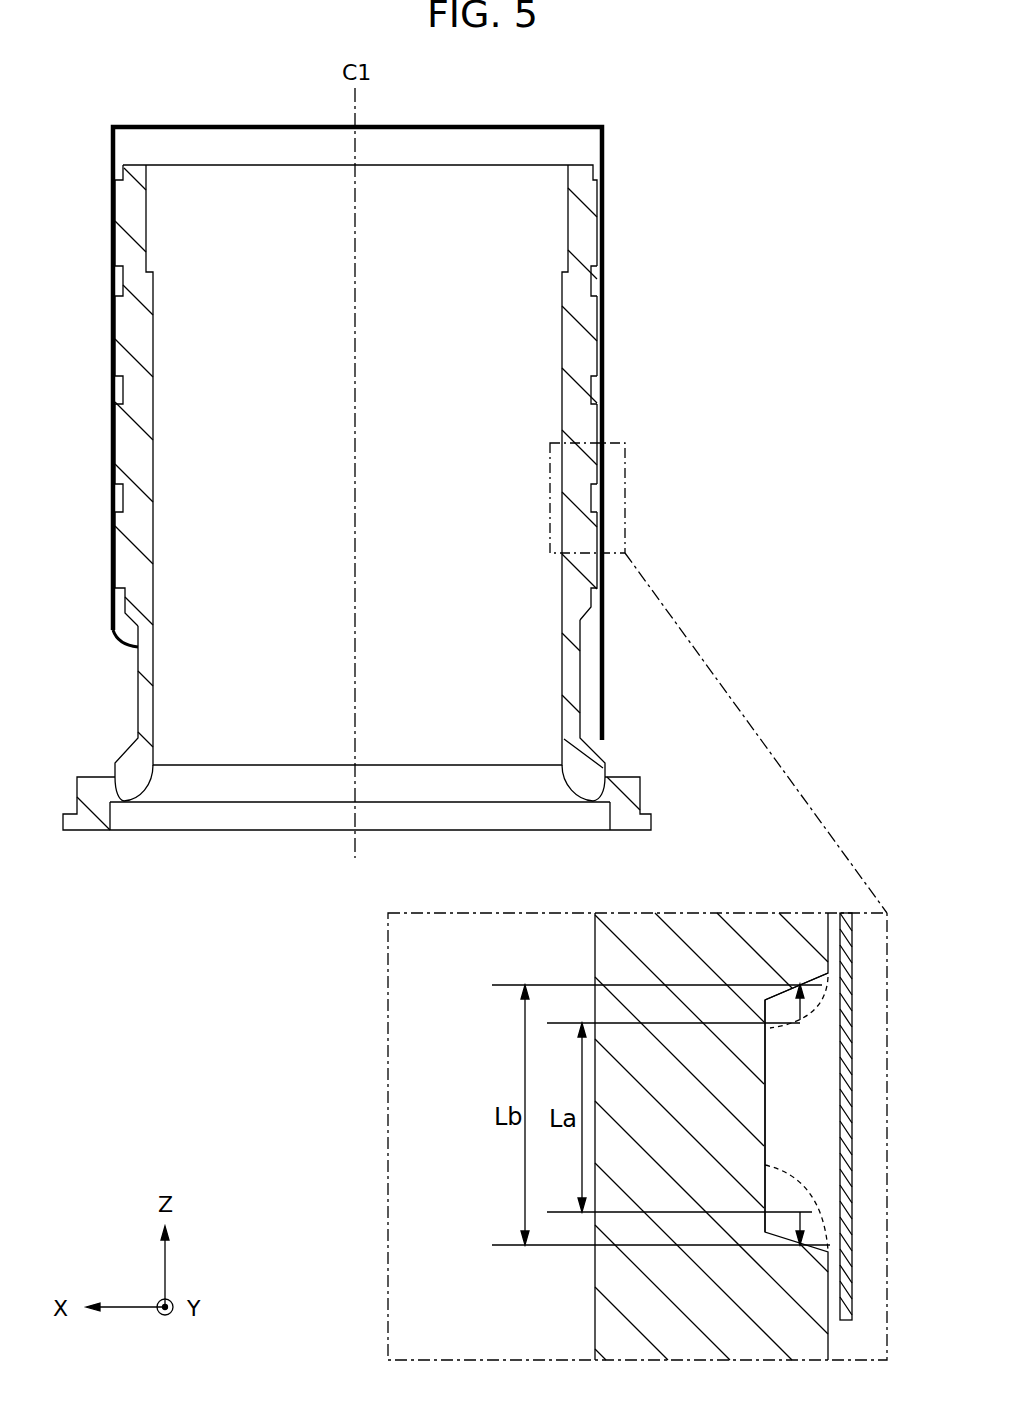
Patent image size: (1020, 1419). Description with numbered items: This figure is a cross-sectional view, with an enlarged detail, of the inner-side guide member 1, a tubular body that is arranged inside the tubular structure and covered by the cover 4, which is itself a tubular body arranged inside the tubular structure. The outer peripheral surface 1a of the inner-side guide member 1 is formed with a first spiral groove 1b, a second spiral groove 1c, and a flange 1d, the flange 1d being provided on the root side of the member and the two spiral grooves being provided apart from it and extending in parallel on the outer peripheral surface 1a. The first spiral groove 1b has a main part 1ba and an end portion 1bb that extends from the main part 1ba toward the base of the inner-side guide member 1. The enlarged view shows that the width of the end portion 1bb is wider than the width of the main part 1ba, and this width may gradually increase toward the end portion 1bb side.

The inner-side guide member 1 is at (483, 186).
The outer peripheral surface 1a is at (580, 683).
The first spiral groove 1b is at (601, 273).
The main part 1ba is at (805, 1008).
The end portion 1bb is at (767, 1118).
The second spiral groove 1c is at (601, 380).
The flange 1d is at (645, 823).
The cover 4 is at (589, 147).